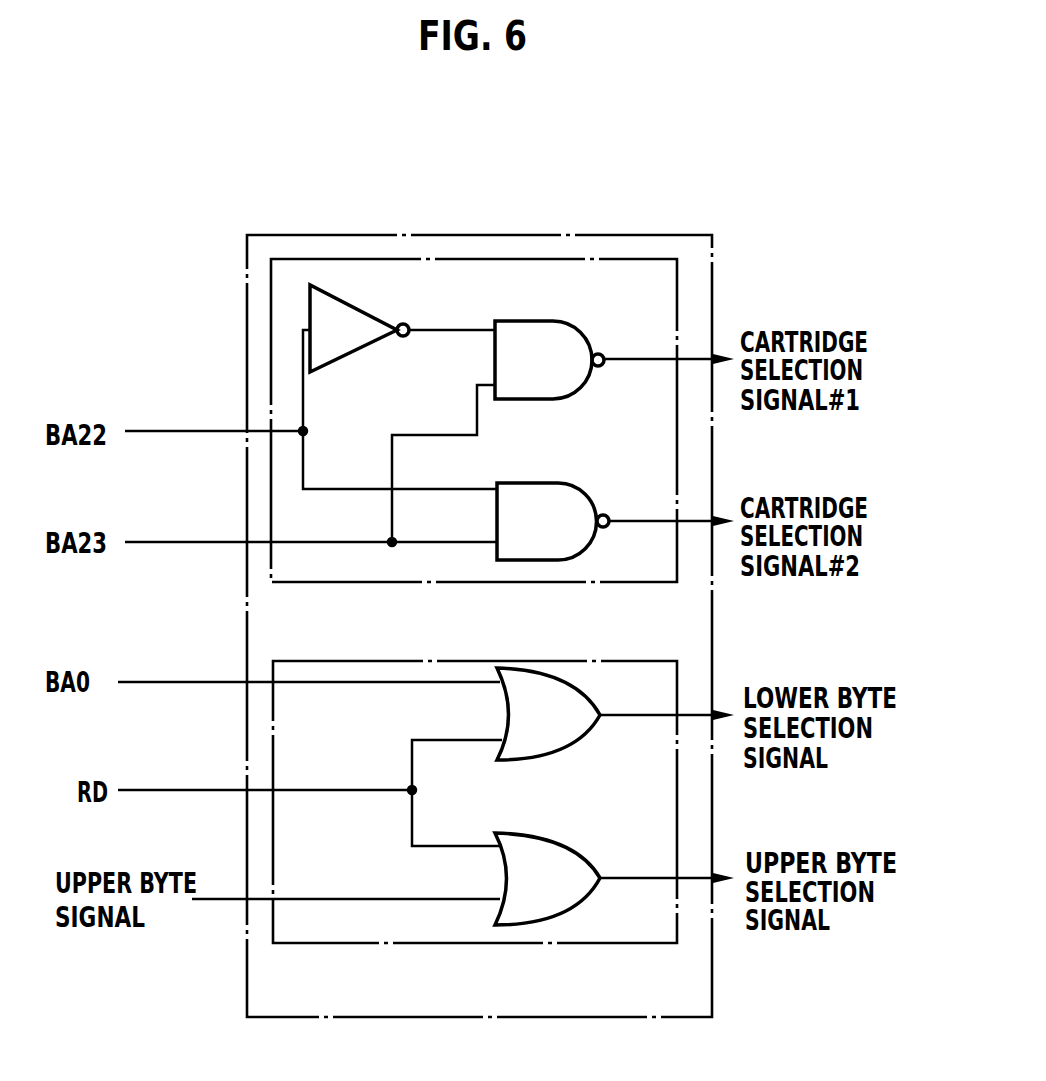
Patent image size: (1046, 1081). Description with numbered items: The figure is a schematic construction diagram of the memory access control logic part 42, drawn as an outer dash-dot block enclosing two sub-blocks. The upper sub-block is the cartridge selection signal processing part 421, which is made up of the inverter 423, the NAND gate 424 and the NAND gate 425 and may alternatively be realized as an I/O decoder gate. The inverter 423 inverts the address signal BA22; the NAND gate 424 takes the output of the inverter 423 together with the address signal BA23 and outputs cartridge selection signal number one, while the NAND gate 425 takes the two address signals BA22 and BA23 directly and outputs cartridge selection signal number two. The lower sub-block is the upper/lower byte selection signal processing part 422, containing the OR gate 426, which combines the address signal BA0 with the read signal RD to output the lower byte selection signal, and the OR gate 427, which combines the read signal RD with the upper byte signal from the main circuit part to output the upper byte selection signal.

The memory access control logic part 42 is at (712, 302).
The cartridge selection signal processing part 421 is at (513, 257).
The upper/lower byte selection signal processing part 422 is at (616, 662).
The inverter 423 is at (374, 317).
The NAND gate 424 is at (538, 321).
The NAND gate 425 is at (558, 482).
The OR gate 426 is at (513, 667).
The OR gate 427 is at (548, 832).